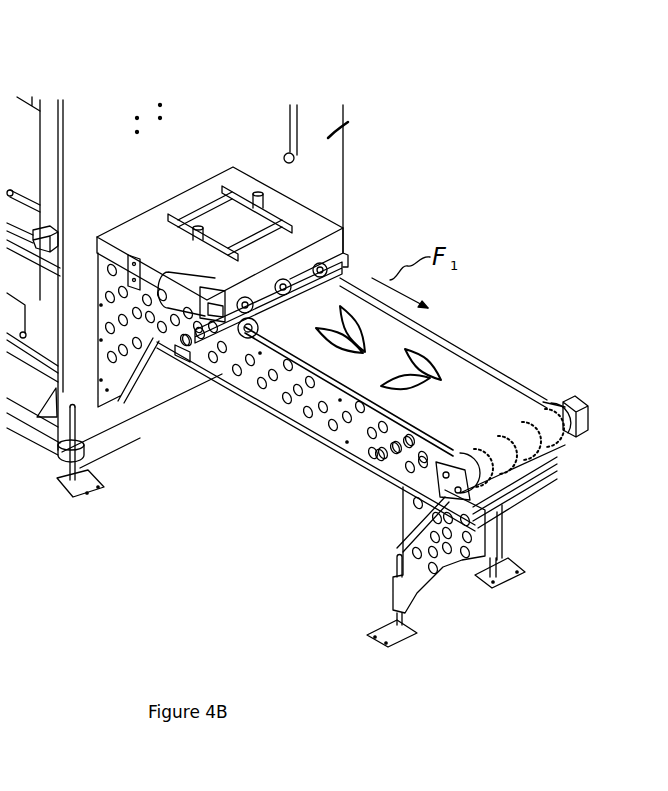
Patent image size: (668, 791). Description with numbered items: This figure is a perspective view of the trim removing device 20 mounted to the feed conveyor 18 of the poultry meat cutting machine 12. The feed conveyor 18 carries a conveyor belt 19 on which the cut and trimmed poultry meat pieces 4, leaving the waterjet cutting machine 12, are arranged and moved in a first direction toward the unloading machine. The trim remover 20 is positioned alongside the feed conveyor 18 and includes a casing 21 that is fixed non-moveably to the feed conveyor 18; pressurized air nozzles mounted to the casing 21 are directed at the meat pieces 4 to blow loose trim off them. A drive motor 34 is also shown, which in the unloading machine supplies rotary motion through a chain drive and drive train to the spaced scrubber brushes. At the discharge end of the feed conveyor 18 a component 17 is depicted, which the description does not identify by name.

The poultry meat pieces 4 is at (358, 305).
The poultry meat cutting machine 12 is at (350, 142).
The end block 17 is at (585, 402).
The feed conveyor 18 is at (297, 433).
The conveyor belt 19 is at (487, 397).
The trim removing device 20 is at (295, 197).
The casing 21 is at (220, 177).
The drive motor 34 is at (188, 284).